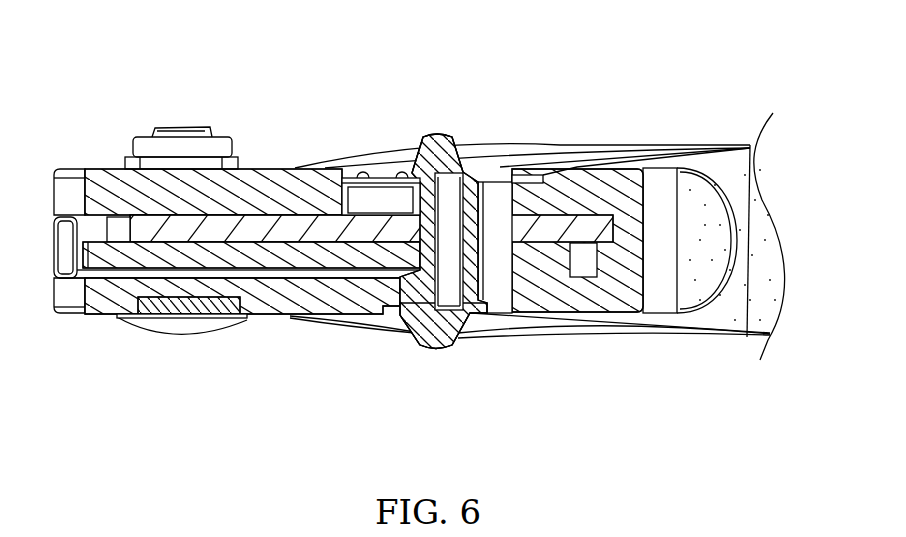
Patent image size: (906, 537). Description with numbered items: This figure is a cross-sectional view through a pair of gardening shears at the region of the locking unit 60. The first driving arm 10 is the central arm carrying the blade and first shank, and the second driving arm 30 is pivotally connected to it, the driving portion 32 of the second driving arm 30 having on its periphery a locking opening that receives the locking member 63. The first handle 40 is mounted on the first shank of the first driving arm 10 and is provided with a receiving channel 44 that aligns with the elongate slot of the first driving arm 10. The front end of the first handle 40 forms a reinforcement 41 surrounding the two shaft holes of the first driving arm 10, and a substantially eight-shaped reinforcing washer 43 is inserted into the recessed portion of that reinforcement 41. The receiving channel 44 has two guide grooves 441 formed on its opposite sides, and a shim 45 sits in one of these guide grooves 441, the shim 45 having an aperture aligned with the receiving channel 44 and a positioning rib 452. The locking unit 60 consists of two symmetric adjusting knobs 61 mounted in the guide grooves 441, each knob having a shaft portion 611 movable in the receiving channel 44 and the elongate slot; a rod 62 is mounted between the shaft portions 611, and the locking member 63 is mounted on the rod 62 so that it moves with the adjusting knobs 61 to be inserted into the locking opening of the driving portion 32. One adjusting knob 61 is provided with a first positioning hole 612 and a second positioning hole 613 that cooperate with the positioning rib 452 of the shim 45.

The first driving arm 10 is at (255, 201).
The second driving arm 30 is at (118, 284).
The driving portion 32 is at (255, 264).
The first handle 40 is at (648, 152).
The reinforcement 41 is at (315, 296).
The reinforcing washer 43 is at (185, 312).
The receiving channel 44 is at (493, 285).
The shim 45 is at (368, 127).
The guide grooves 441 is at (537, 176).
The positioning rib 452 is at (395, 176).
The locking unit 60 is at (439, 251).
The adjusting knobs 61 is at (438, 140).
The rod 62 is at (460, 175).
The locking member 63 is at (380, 302).
The shaft portion 611 is at (512, 180).
The first positioning hole 612 is at (400, 180).
The second positioning hole 613 is at (365, 182).